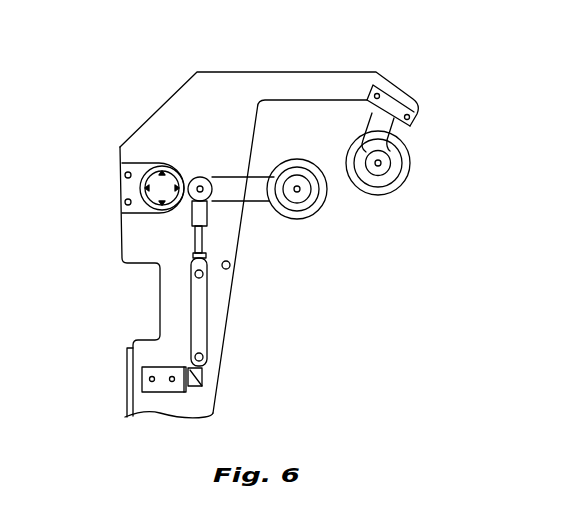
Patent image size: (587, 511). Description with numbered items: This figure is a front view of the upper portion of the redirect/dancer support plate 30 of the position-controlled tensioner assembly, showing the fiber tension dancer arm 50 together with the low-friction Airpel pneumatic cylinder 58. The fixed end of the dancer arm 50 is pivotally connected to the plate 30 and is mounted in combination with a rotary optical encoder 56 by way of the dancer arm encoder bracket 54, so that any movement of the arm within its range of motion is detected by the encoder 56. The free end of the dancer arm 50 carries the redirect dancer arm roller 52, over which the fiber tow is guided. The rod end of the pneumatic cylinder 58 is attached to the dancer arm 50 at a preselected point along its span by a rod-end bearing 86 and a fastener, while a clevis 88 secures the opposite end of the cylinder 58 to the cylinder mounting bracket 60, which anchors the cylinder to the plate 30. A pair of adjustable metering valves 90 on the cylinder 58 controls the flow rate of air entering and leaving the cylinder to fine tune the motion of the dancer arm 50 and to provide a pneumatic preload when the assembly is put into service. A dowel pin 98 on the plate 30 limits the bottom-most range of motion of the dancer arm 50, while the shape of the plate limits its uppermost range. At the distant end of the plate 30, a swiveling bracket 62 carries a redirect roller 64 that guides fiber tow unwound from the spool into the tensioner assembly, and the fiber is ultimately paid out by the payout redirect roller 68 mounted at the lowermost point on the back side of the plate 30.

The redirect/dancer support plate 30 is at (221, 128).
The fiber tension dancer arm 50 is at (253, 176).
The redirect dancer arm roller 52 is at (333, 205).
The dancer arm encoder bracket 54 is at (119, 185).
The rotary optical encoder 56 is at (157, 182).
The pneumatic cylinder 58 is at (207, 303).
The mounting bracket 60 is at (141, 379).
The swiveling bracket 62 is at (392, 105).
The redirect roller 64 is at (410, 165).
The payout redirect roller 68 is at (16, 46).
The rod-end bearing 86 is at (200, 177).
The clevis 88 is at (202, 385).
The adjustable metering valves 90 is at (204, 277).
The dowel pin 98 is at (231, 264).